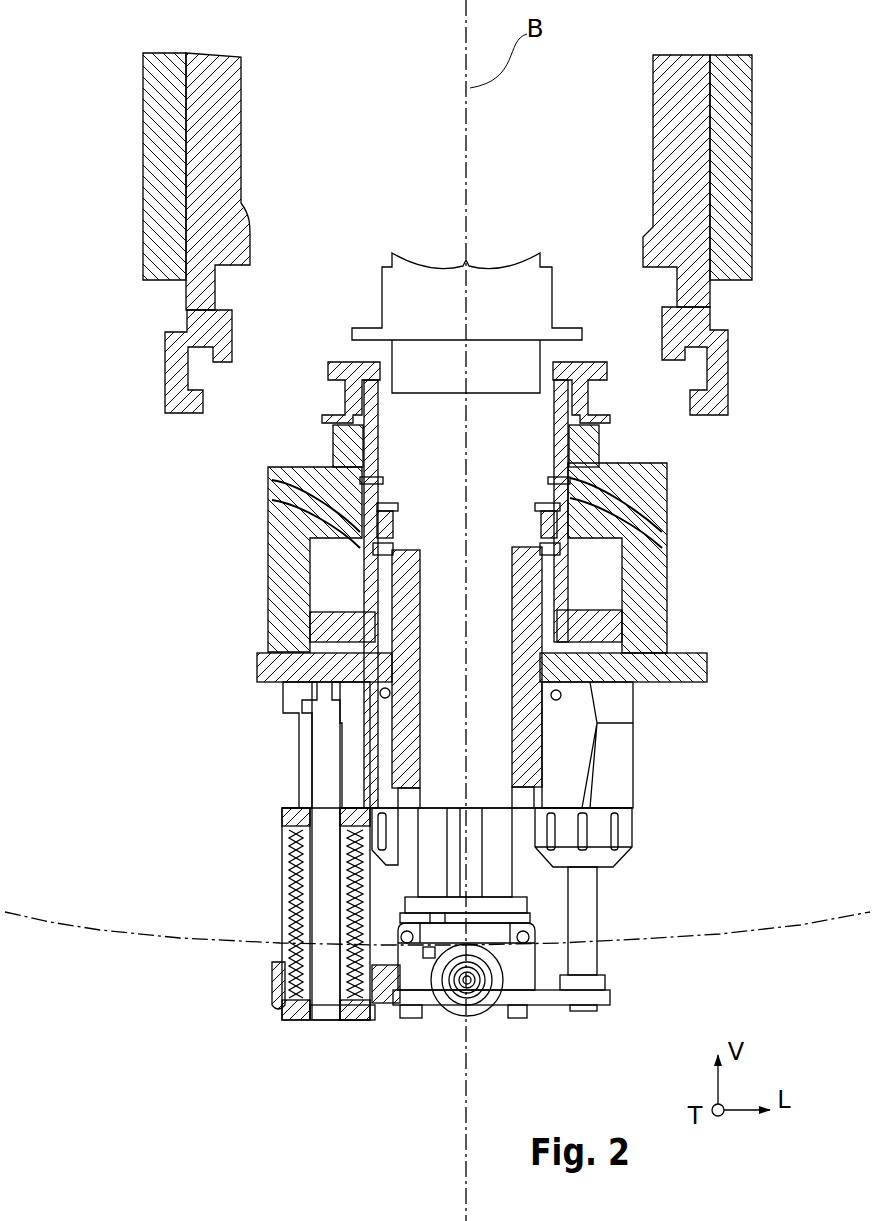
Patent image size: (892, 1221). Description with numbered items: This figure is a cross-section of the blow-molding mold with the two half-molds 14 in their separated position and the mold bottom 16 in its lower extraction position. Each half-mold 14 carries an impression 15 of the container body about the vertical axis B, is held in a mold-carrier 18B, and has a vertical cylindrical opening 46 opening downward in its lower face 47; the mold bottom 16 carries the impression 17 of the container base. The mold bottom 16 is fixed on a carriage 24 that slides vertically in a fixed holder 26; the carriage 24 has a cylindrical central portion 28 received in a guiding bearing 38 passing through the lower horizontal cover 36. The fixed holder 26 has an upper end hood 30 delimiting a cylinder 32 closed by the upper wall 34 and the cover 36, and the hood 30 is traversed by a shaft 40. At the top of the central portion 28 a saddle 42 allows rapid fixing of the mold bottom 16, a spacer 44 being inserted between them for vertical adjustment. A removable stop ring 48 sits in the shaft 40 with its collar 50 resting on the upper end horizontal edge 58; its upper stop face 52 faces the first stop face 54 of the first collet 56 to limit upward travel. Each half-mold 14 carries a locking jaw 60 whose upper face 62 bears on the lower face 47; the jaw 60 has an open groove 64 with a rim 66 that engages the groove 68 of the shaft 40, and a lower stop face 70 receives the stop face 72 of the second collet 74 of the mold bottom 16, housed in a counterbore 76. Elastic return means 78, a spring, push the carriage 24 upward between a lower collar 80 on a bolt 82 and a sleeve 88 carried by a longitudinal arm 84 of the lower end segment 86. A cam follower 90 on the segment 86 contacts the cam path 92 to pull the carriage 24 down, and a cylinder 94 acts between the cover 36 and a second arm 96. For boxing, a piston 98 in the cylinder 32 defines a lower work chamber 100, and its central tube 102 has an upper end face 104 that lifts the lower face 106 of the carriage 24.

The half-mold 14 is at (213, 160).
The impression 15 is at (241, 100).
The mold bottom 16 is at (395, 292).
The impression 17 is at (497, 250).
The mold-carrier 18B is at (160, 150).
The carriage 24 is at (445, 725).
The fixed holder 26 is at (685, 572).
The cylindrical central portion 28 is at (455, 662).
The upper end hood 30 is at (290, 553).
The cylinder 32 is at (325, 575).
The upper wall 34 is at (300, 520).
The lower horizontal cover 36 is at (705, 665).
The guiding bearing 38 is at (395, 765).
The shaft 40 is at (600, 445).
The saddle 42 is at (355, 450).
The spacer 44 is at (423, 360).
The vertical cylindrical opening 46 is at (250, 248).
The lower face 47 is at (187, 318).
The removable stop ring 48 is at (568, 368).
The collar 50 is at (700, 372).
The upper stop face 52 is at (338, 428).
The first stop face 54 is at (620, 497).
The first collet 56 is at (630, 528).
The upper end horizontal edge 58 is at (338, 365).
The locking jaw 60 is at (168, 365).
The upper face 62 is at (186, 262).
The open groove 64 is at (208, 392).
The rim 66 is at (178, 400).
The groove 68 is at (593, 397).
The lower stop face 70 is at (225, 308).
The stop face 72 is at (588, 345).
The second collet 74 is at (548, 345).
The counterbore 76 is at (237, 270).
The elastic return means 78 is at (288, 888).
The lower collar 80 is at (300, 1015).
The bolt 82 is at (300, 870).
The longitudinal arm 84 is at (278, 990).
The lower end segment 86 is at (412, 1008).
The sleeve 88 is at (290, 922).
The cam follower 90 is at (470, 998).
The cam path 92 is at (95, 938).
The cylinder 94 is at (590, 740).
The second arm 96 is at (610, 1002).
The piston 98 is at (320, 622).
The lower work chamber 100 is at (600, 660).
The central tube 102 is at (610, 578).
The upper end face 104 is at (540, 520).
The lower face 106 is at (300, 492).